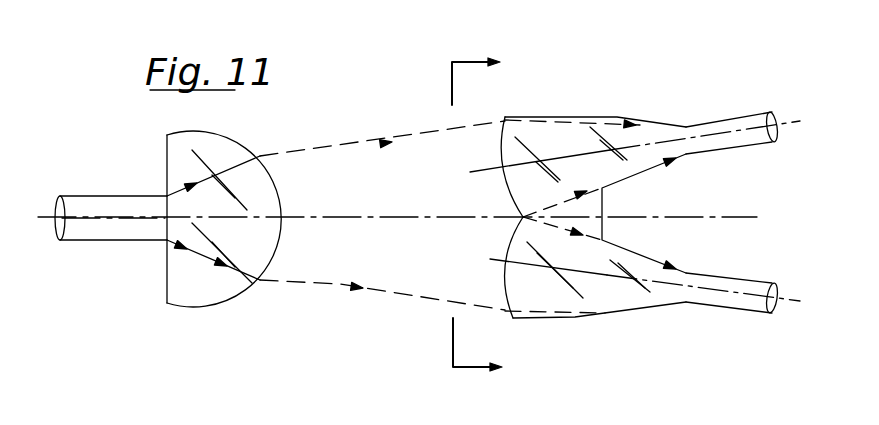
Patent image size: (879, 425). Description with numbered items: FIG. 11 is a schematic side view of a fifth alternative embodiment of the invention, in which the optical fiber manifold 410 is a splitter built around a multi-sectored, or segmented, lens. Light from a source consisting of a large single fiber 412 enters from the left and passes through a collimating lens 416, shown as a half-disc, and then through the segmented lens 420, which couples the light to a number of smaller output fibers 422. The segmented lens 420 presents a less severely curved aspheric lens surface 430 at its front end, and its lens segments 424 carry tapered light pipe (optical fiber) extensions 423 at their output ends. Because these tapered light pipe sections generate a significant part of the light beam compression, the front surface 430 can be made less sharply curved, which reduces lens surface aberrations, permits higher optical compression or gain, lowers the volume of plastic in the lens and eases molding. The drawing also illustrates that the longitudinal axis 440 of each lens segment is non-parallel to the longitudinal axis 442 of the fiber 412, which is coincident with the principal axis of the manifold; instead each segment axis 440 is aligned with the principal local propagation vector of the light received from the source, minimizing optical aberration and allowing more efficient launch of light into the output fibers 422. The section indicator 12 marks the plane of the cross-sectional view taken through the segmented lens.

The optical fiber manifold 410 is at (362, 120).
The large single fiber 412 is at (125, 200).
The longitudinal axis of the fiber 442 is at (133, 222).
The collimating lens 416 is at (191, 292).
The segmented lens 420 is at (547, 191).
The aspheric lens surface 430 is at (505, 194).
The lens segments 424 is at (573, 118).
The tapered light pipe extensions 423 is at (657, 128).
The output fibers 422 is at (738, 124).
The longitudinal axis of each lens segment 440 is at (792, 123).
The section line 12- 12 is at (502, 221).